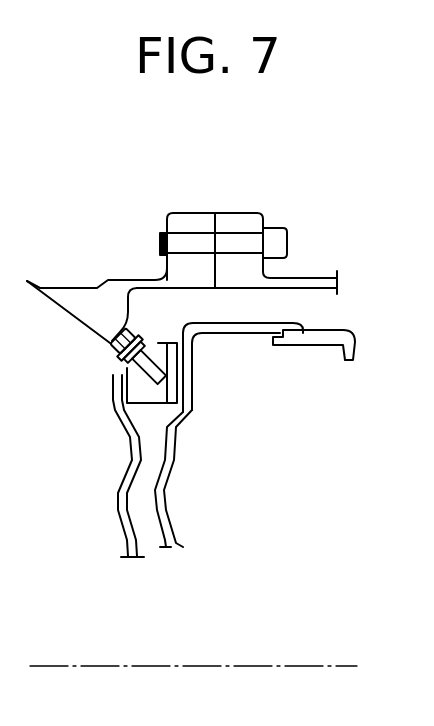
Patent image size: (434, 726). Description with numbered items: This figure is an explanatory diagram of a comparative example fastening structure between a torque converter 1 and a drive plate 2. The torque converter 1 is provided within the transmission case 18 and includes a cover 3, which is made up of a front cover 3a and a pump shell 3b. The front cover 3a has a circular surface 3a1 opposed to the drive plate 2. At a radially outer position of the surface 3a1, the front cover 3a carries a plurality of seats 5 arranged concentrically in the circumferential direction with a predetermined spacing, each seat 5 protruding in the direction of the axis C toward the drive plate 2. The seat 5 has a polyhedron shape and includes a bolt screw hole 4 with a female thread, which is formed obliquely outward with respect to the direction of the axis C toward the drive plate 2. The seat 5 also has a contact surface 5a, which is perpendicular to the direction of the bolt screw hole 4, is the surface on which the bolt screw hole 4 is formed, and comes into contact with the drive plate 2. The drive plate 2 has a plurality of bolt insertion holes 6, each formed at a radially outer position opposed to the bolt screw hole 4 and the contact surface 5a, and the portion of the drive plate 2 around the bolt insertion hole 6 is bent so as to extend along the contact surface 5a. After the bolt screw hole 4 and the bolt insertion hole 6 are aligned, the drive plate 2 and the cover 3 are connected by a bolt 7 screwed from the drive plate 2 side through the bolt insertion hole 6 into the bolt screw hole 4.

The torque converter 1 is at (343, 316).
The drive plate 2 is at (132, 450).
The cover 3 is at (255, 435).
The front cover 3a is at (230, 334).
The circular surface 3a1 is at (168, 461).
The pump shell 3b is at (303, 341).
The bolt screw hole 4 is at (158, 382).
The seat 5 is at (157, 400).
The contact surface 5a is at (115, 378).
The bolt insertion hole 6 is at (134, 331).
The bolt 7 is at (108, 364).
The transmission case 18 is at (74, 291).
The axis C is at (276, 666).